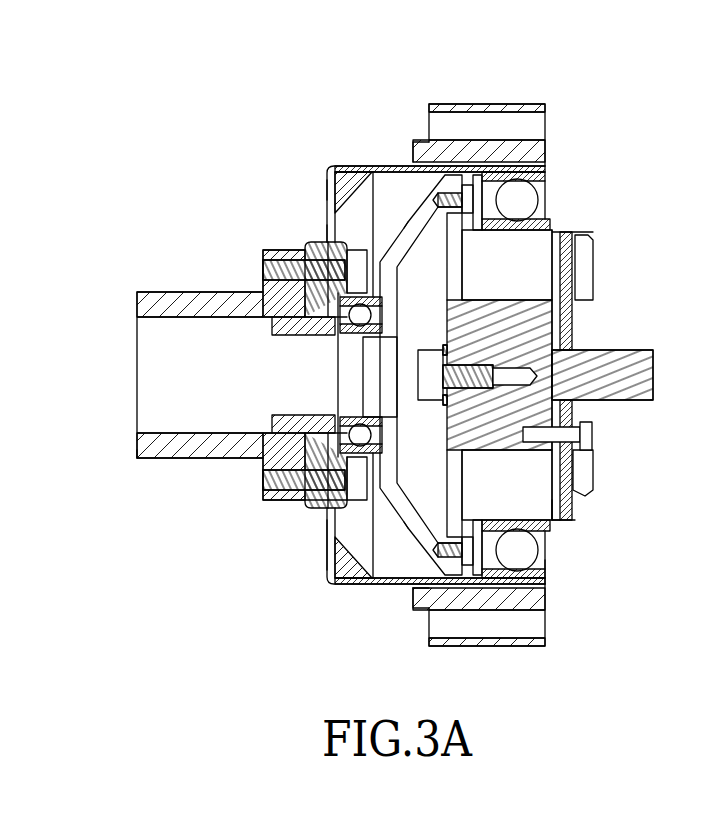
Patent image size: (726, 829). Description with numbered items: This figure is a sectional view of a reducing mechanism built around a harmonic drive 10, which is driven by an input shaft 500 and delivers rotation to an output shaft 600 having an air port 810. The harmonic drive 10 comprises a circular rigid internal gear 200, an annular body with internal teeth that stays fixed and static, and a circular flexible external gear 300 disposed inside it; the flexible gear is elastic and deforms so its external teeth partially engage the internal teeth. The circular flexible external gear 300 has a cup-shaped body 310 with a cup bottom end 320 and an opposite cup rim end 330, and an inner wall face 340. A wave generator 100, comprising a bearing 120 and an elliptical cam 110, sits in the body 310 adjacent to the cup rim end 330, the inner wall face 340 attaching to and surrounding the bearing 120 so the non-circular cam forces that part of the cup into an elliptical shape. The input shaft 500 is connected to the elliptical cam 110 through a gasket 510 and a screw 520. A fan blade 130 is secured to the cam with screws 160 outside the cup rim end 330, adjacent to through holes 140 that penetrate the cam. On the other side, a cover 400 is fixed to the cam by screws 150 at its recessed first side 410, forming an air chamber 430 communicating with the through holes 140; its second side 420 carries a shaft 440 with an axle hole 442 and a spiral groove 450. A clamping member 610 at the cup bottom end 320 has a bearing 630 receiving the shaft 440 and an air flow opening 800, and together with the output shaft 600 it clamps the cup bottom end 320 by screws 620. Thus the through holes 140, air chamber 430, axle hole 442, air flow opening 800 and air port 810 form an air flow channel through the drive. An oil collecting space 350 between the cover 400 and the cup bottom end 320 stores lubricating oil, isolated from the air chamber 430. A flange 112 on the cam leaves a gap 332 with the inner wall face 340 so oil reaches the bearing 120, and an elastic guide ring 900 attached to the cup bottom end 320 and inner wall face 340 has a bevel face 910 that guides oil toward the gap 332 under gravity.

The harmonic drive 10 is at (545, 82).
The wave generator 100 is at (655, 522).
The elliptical cam 110 is at (556, 519).
The flange 112 is at (452, 195).
The bearing 120 is at (550, 578).
The fan blade 130 is at (568, 504).
The through holes 140 is at (528, 475).
The screws 150 is at (470, 195).
The screws 160 is at (592, 436).
The circular rigid internal gear 200 is at (520, 648).
The circular flexible external gear 300 is at (346, 586).
The body 310 is at (343, 166).
The cup bottom end 320 is at (312, 232).
The cup rim end 330 is at (562, 172).
The gap 332 is at (434, 610).
The inner wall face 340 is at (410, 190).
The oil collecting space 350 is at (383, 185).
The cover 400 is at (398, 220).
The first side 410 is at (476, 612).
The second side 420 is at (370, 195).
The air chamber 430 is at (532, 268).
The shaft 440 is at (275, 326).
The axle hole 442 is at (360, 378).
The spiral groove 450 is at (414, 560).
The input shaft 500 is at (655, 380).
The gasket 510 is at (500, 330).
The screw 520 is at (535, 360).
The output shaft 600 is at (145, 452).
The clamping member 610 is at (330, 240).
The screws 620 is at (268, 263).
The bearing 630 is at (343, 510).
The air flow opening 800 is at (268, 373).
The air port 810 is at (128, 410).
The guide ring 900 is at (327, 565).
The bevel face 910 is at (340, 552).